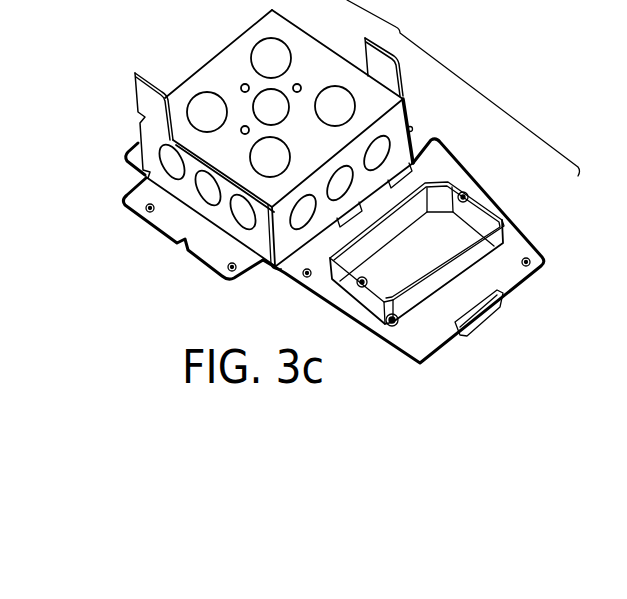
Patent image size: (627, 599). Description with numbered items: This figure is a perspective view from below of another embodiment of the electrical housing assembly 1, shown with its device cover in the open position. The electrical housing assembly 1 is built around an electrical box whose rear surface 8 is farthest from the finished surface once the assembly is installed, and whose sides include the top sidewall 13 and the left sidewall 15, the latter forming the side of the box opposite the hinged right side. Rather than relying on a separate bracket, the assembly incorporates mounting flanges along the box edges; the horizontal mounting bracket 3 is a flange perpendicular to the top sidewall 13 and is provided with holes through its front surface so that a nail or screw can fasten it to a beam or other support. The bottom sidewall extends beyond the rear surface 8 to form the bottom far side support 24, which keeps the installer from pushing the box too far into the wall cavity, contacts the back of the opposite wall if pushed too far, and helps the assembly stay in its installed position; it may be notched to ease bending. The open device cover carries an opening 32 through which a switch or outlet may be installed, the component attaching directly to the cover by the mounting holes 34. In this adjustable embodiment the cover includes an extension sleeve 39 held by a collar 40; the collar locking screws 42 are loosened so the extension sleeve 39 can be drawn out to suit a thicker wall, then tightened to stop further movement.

The electrical housing assembly 1 is at (400, 31).
The horizontal mounting bracket 3 is at (345, 251).
The rear surface 8 is at (265, 165).
The top sidewall 13 is at (192, 198).
The left sidewall 15 is at (300, 262).
The bottom far side support 24 is at (140, 95).
The opening 32 is at (445, 266).
The mounting holes 34 is at (465, 196).
The extension sleeve 39 is at (485, 217).
The collar 40 is at (515, 243).
The collar locking screws 42 is at (393, 327).